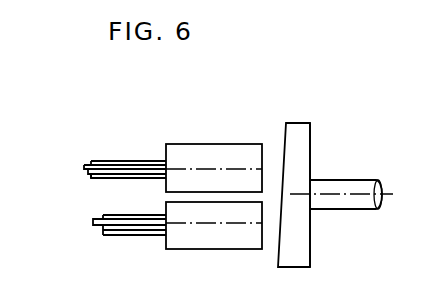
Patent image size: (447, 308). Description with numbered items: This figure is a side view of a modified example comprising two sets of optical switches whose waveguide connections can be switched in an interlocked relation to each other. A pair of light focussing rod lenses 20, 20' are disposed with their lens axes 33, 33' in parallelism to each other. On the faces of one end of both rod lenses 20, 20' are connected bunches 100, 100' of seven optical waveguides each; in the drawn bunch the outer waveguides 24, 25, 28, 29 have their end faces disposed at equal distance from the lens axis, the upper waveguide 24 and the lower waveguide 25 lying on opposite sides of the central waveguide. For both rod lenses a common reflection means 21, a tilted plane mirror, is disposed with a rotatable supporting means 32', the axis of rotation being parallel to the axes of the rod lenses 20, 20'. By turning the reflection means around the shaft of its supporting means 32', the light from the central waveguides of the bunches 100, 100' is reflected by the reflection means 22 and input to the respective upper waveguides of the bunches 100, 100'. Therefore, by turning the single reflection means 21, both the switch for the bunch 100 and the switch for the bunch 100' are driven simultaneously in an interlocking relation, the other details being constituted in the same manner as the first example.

The rod lens 20 is at (214, 136).
The rod lens 20' is at (214, 248).
The reflection means 21 is at (300, 138).
The reflection means 22 is at (285, 152).
The optical waveguide 24 is at (100, 160).
The optical waveguide 25 is at (115, 178).
The optical waveguide 28 is at (91, 179).
The optical waveguide 29 is at (117, 160).
The rotatable supporting means 32' is at (341, 217).
The lens axis 33 is at (214, 140).
The lens axis 33' is at (214, 258).
The bunch of optical waveguides 100 is at (127, 128).
The bunch of optical waveguides 100' is at (129, 246).